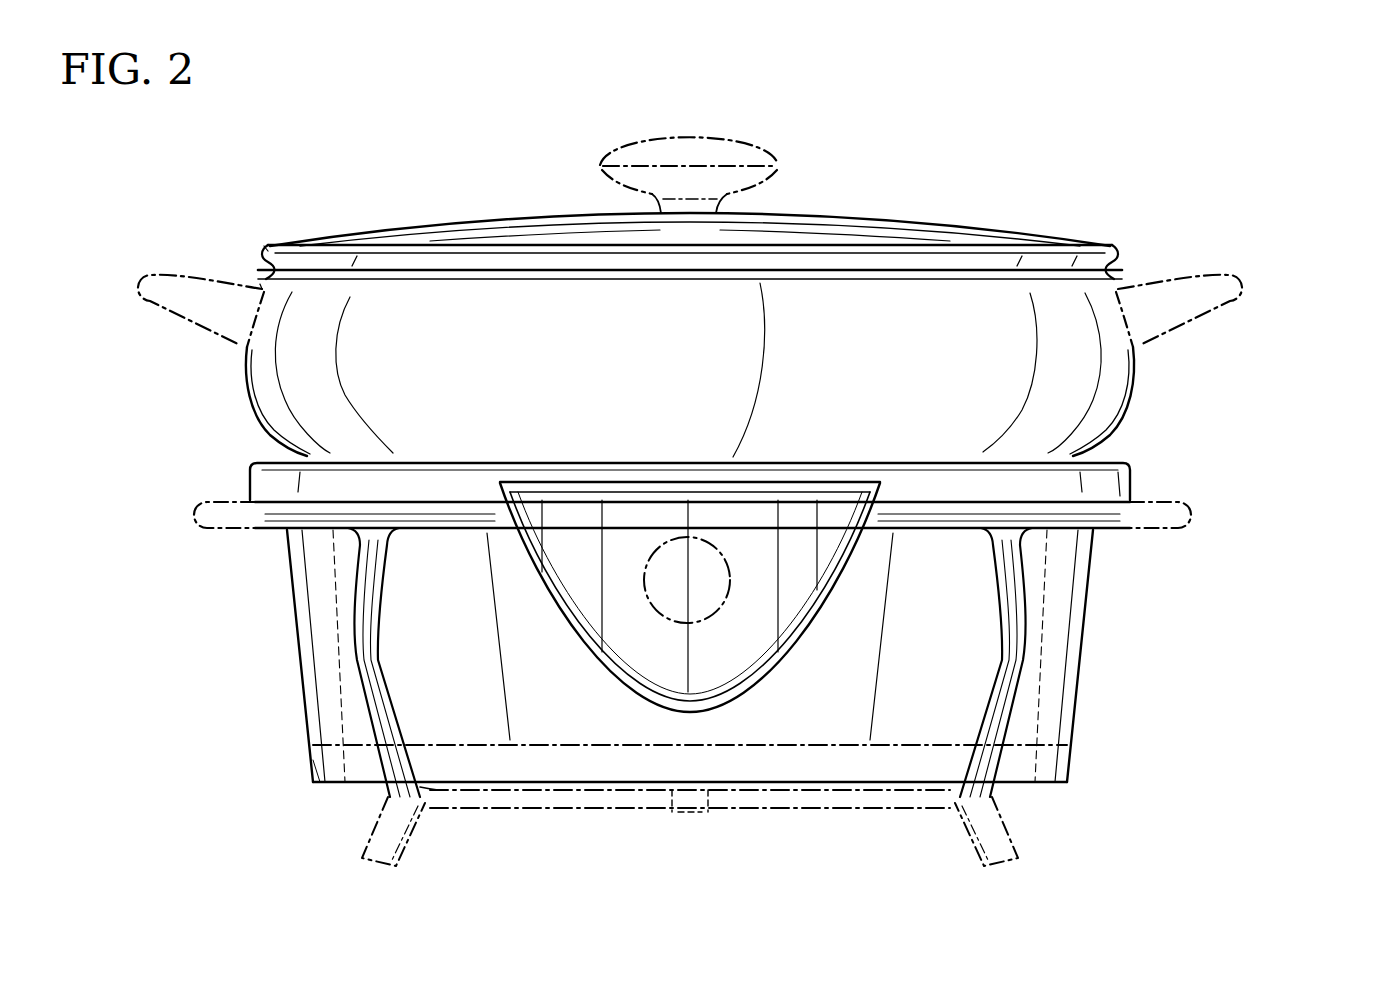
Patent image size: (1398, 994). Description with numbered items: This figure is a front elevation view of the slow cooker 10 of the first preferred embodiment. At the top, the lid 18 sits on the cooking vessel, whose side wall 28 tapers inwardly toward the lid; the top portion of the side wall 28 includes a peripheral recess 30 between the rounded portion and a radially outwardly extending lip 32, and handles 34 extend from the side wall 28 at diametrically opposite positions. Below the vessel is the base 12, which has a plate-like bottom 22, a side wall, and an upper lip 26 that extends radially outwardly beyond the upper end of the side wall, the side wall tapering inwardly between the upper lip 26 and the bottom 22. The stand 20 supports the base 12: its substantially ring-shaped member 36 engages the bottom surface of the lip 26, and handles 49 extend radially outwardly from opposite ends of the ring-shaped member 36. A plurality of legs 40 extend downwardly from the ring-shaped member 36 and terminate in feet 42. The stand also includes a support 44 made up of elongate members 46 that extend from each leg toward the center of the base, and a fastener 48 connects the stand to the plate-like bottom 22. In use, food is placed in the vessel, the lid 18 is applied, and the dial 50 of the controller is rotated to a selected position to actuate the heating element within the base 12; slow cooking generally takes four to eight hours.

The slow cooker 10 is at (1280, 158).
The base 12 is at (303, 609).
The lid 18 is at (893, 226).
The stand 20 is at (1016, 659).
The plate-like bottom 22 is at (330, 760).
The upper lip 26 is at (268, 490).
The side wall 28 is at (240, 382).
The peripheral recess 30 is at (262, 288).
The lip 32 is at (266, 251).
The handles 34 is at (150, 285).
The ring-shaped member 36 is at (1062, 530).
The legs 40 is at (365, 665).
The feet 42 is at (1000, 826).
The support 44 is at (862, 796).
The elongate members 46 is at (508, 803).
The fastener 48 is at (690, 820).
The handles 49 is at (1165, 512).
The dial 50 is at (677, 570).